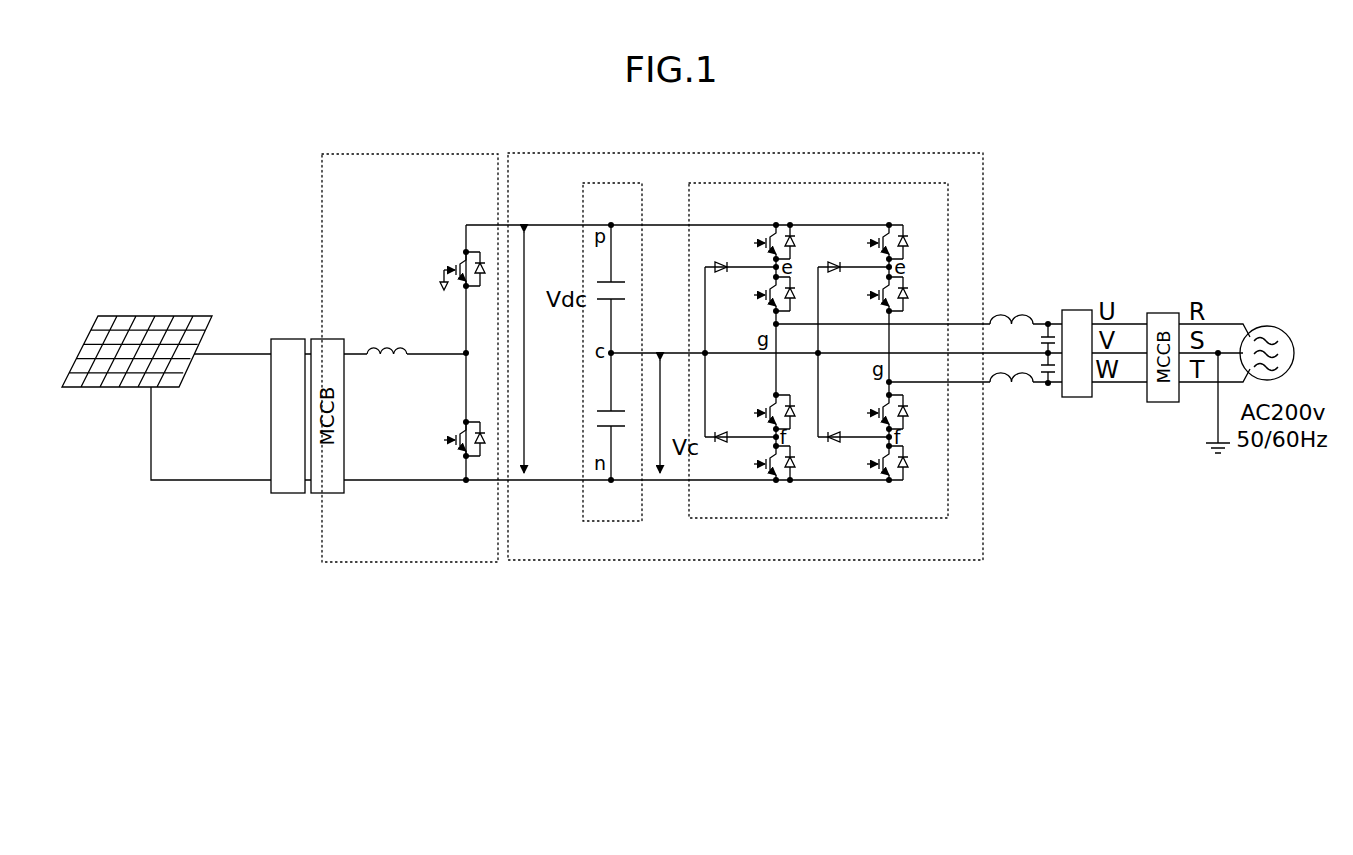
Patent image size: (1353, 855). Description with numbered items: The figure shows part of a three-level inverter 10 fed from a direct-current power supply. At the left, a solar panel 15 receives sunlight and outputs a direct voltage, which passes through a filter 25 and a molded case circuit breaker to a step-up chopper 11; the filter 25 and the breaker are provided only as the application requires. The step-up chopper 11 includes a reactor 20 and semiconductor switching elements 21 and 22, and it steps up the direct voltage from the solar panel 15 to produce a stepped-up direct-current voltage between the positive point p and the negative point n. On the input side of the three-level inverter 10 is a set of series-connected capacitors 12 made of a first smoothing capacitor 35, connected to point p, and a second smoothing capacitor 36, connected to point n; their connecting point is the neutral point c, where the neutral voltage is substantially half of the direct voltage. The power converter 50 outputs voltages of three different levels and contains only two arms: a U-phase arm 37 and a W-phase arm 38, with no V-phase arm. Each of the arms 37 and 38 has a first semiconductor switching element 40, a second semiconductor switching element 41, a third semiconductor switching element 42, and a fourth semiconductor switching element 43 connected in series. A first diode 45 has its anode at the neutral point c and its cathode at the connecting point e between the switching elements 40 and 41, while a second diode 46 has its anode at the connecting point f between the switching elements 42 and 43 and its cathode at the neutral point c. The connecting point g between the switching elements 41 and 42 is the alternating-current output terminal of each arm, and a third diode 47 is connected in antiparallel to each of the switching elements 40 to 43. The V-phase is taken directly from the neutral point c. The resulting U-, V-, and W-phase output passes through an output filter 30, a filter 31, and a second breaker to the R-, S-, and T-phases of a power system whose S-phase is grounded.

The three-level inverter 10 is at (598, 153).
The step-up chopper 11 is at (322, 192).
The set of series-connected capacitors 12 is at (608, 521).
The solar panel 15 is at (146, 323).
The reactor 20 is at (393, 346).
The semiconductor switching element 21 is at (460, 254).
The semiconductor switching element 22 is at (453, 438).
The filter 25 is at (294, 343).
The output filter 30 is at (1005, 317).
The filter 31 is at (1070, 310).
The first smoothing capacitor 35 is at (610, 280).
The second smoothing capacitor 36 is at (610, 430).
The U-phase arm 37 is at (733, 467).
The W-phase arm 38 is at (855, 472).
The first semiconductor switching element 40 is at (762, 242).
The second semiconductor switching element 41 is at (758, 293).
The third semiconductor switching element 42 is at (762, 410).
The fourth semiconductor switching element 43 is at (757, 466).
The first diode 45 is at (725, 262).
The second diode 46 is at (723, 443).
The third diode 47 is at (793, 237).
The power converter 50 is at (938, 180).